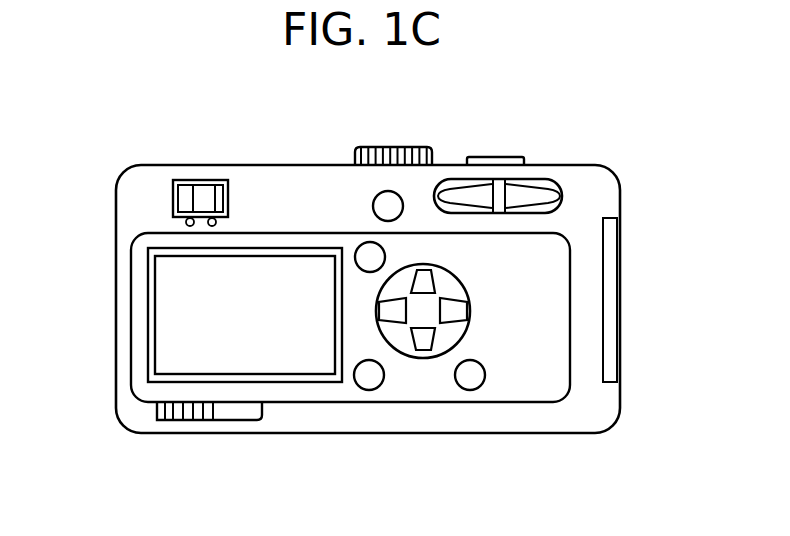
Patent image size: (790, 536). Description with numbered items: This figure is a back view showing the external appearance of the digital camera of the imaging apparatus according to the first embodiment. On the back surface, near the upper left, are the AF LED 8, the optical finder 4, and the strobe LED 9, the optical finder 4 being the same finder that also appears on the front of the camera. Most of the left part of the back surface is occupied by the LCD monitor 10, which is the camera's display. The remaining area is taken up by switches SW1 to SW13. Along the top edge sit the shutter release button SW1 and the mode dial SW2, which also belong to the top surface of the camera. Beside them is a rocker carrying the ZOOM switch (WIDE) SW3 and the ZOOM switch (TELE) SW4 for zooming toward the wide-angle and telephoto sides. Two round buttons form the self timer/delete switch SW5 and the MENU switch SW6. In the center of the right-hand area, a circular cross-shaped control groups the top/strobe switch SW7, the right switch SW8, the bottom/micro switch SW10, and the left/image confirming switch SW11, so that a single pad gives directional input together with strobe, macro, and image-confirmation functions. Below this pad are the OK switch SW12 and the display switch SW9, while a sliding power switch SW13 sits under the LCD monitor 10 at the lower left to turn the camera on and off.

The optical finder 4 is at (186, 202).
The AF LED 8 is at (190, 183).
The strobe LED 9 is at (209, 182).
The LCD monitor 10 is at (170, 323).
The shutter release button SW1 is at (498, 160).
The mode dial SW2 is at (395, 147).
The ZOOM switch (WIDE) SW3 is at (448, 193).
The ZOOM switch (TELE) SW4 is at (549, 194).
The self timer/delete switch SW5 is at (385, 200).
The MENU switch SW6 is at (368, 253).
The top/strobe switch SW7 is at (427, 277).
The right switch SW8 is at (458, 312).
The display switch SW9 is at (470, 375).
The bottom/micro switch SW10 is at (422, 347).
The left/image confirming switch SW11 is at (380, 310).
The OK switch SW12 is at (369, 375).
The power switch SW13 is at (221, 413).